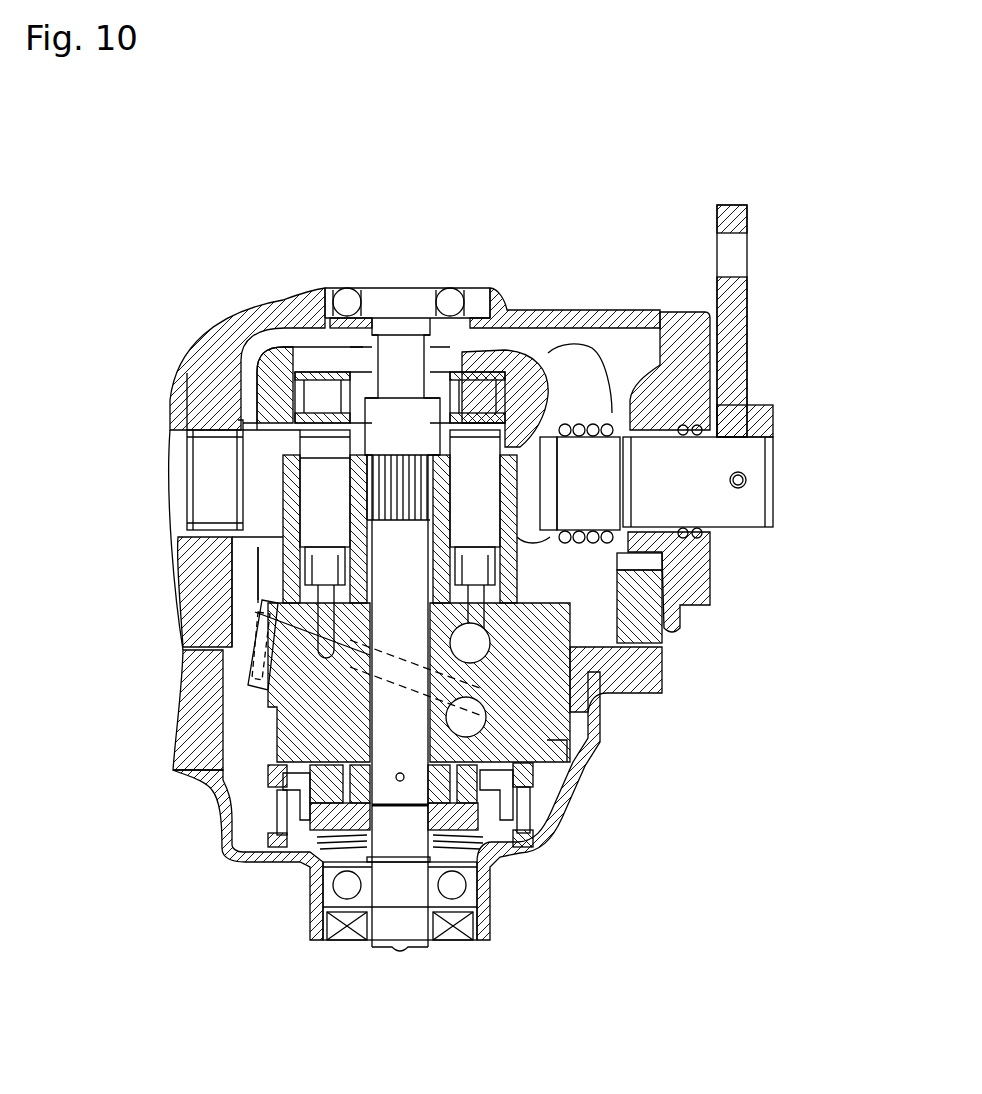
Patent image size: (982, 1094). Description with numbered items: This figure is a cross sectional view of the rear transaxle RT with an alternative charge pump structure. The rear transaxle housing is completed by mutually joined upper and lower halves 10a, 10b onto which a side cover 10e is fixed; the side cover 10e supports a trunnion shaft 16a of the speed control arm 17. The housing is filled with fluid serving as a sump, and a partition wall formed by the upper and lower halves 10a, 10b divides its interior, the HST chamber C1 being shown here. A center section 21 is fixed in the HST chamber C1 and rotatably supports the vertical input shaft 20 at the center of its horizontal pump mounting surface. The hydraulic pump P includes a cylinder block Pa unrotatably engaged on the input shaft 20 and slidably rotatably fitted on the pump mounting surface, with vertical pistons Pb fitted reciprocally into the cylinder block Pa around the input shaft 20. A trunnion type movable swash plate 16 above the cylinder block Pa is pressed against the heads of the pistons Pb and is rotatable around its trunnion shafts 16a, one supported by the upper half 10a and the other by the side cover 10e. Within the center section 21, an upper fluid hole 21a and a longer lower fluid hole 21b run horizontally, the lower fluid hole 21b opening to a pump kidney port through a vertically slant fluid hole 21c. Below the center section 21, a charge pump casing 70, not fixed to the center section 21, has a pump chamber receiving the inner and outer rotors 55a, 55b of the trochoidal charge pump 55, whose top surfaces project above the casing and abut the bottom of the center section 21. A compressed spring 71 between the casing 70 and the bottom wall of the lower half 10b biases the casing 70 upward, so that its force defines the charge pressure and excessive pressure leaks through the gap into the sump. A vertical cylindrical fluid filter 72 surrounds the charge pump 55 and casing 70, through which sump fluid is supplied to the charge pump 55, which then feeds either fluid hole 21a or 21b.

The upper half 10a is at (210, 372).
The lower half 10b is at (190, 692).
The side cover 10e is at (688, 340).
The movable swash plate 16 is at (510, 358).
The trunnion shaft 16a is at (200, 490).
The speed control arm 17 is at (732, 340).
The input shaft 20 is at (400, 297).
The center section 21 is at (570, 620).
The upper fluid hole 21a is at (470, 643).
The lower fluid hole 21b is at (470, 717).
The slant fluid hole 21c is at (323, 687).
The charge pump 55 is at (680, 823).
The inner rotor 55a is at (470, 790).
The outer rotor 55b is at (520, 780).
The charge pump casing 70 is at (500, 822).
The compressed spring 71 is at (478, 845).
The fluid filter 72 is at (277, 805).
The hydraulic pump P is at (268, 340).
The cylinder block Pa is at (282, 553).
The piston Pb is at (317, 480).
The HST chamber C1 is at (570, 352).
The rotary unit RT is at (656, 208).